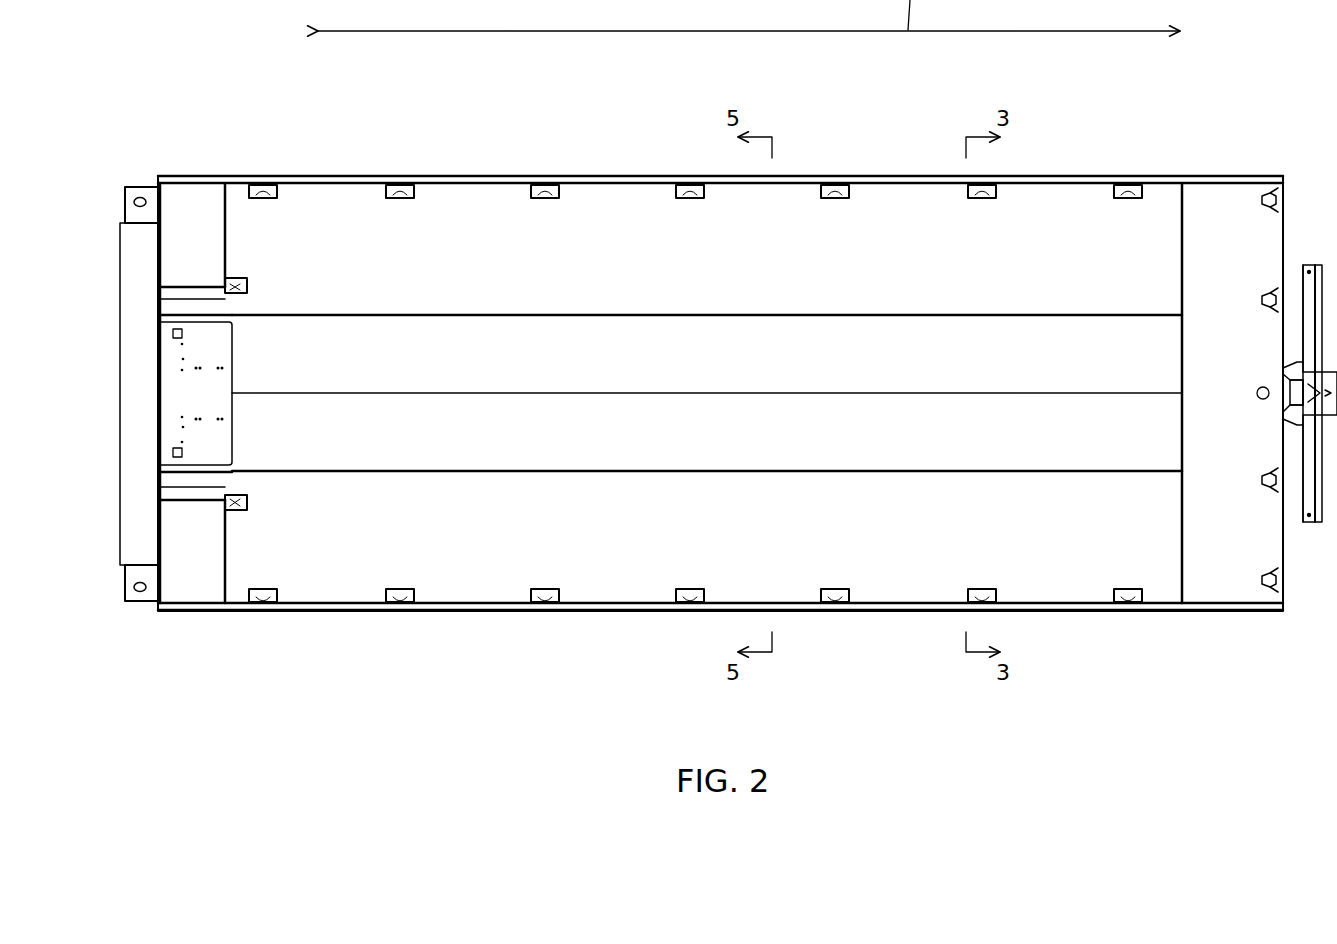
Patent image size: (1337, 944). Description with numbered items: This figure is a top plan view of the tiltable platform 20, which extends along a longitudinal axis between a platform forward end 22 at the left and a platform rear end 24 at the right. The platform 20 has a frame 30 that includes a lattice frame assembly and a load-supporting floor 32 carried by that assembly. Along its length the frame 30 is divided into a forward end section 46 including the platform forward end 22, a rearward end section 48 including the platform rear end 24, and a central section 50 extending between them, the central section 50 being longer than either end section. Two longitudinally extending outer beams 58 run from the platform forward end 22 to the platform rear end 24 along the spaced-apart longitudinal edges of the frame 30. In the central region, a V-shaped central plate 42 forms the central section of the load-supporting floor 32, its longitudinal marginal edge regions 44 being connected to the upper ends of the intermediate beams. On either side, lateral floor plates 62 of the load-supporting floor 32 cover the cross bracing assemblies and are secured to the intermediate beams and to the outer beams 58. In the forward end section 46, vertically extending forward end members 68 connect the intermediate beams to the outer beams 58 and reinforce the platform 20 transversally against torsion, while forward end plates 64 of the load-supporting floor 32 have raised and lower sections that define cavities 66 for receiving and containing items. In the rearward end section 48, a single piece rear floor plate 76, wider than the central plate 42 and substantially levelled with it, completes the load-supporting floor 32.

The tiltable platform 20 is at (590, 720).
The platform forward end 22 is at (186, 156).
The platform rear end 24 is at (1288, 152).
The frame 30 is at (567, 614).
The load-supporting floor 32 is at (878, 265).
The central plate 42 is at (453, 348).
The longitudinal marginal edge regions 44 is at (1129, 336).
The forward end section 46 is at (176, 630).
The rearward end section 48 is at (1250, 152).
The central section 50 is at (609, 171).
The longitudinally extending outer beams 58 is at (840, 184).
The lateral floor plate 62 is at (1033, 230).
The forward end plates 64 is at (172, 192).
The cavities 66 is at (200, 207).
The vertically extending forward end members 68 is at (157, 181).
The rear floor plate 76 is at (1228, 575).